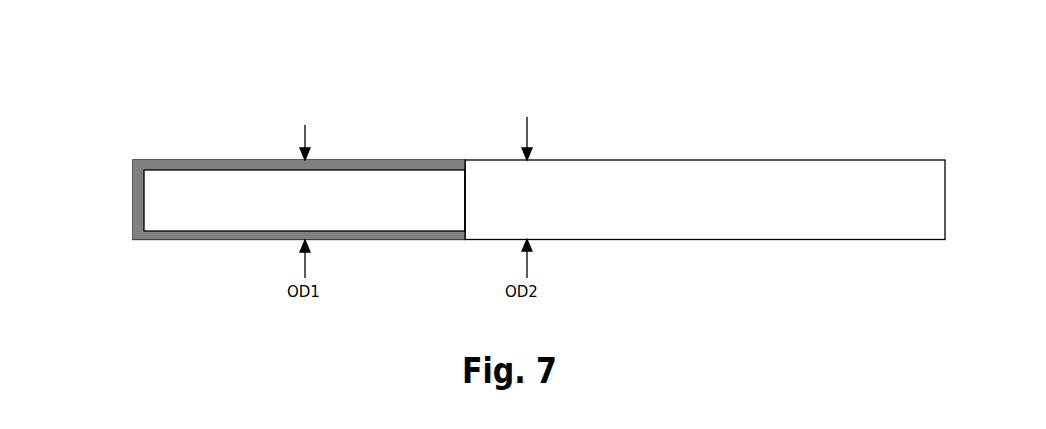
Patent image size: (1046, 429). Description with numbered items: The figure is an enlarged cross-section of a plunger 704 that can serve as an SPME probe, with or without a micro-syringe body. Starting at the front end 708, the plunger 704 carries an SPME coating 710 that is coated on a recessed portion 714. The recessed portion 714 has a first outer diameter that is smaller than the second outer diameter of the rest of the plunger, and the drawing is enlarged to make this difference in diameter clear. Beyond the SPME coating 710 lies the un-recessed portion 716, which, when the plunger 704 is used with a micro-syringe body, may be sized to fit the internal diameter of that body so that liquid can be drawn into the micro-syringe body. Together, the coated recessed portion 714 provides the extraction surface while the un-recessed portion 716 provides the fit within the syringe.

The plunger 704 is at (499, 131).
The front end 708 is at (125, 192).
The SPME coating 710 is at (260, 160).
The recessed portion 714 is at (190, 195).
The un-recessed portion 716 is at (490, 160).